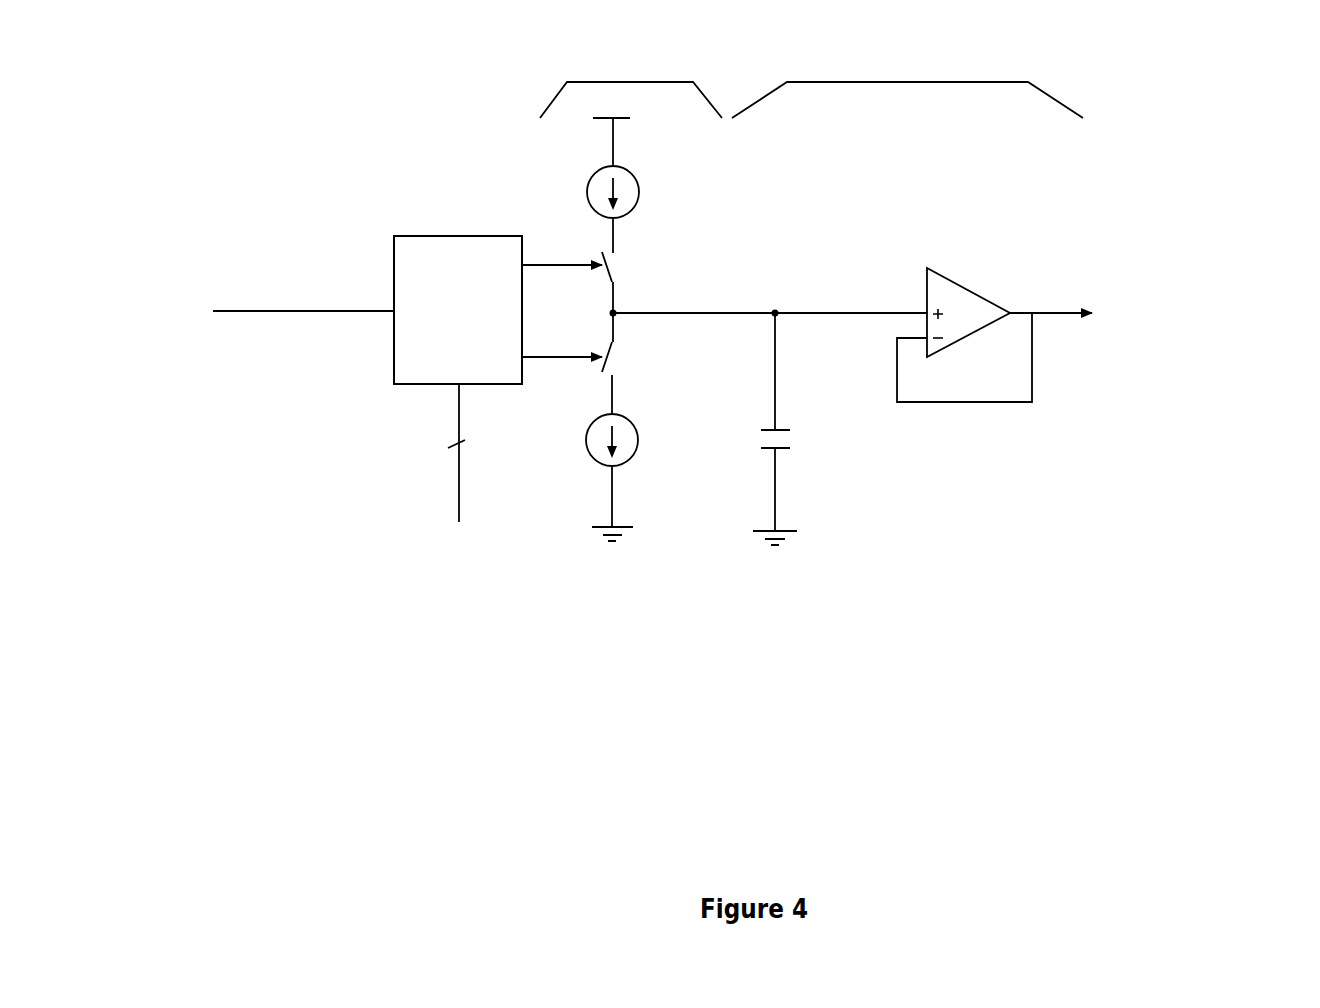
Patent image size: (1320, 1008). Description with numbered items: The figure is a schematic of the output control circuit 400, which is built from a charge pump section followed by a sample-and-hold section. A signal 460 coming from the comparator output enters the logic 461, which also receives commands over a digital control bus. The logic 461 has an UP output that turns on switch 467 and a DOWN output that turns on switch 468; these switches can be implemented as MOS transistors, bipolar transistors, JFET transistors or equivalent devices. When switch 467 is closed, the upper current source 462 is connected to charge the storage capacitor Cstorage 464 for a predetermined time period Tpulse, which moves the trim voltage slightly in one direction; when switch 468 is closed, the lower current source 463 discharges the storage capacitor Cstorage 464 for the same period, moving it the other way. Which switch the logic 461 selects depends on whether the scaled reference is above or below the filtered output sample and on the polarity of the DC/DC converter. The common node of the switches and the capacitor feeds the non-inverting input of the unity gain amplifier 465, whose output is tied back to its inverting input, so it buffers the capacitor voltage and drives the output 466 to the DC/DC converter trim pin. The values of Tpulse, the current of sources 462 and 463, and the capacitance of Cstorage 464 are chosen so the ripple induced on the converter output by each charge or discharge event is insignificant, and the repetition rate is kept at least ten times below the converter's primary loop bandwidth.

The trim control circuit 400 is at (697, 452).
The comparator output input line 460 is at (241, 314).
The logic 461 is at (498, 408).
The current source 462 is at (628, 185).
The current source 463 is at (629, 477).
The storage capacitor Cstorage 464 is at (812, 429).
The unity gain amplifier 465 is at (964, 335).
The output to DC-DC converter trim pin 466 is at (1158, 325).
The switch 467 is at (633, 282).
The switch 468 is at (633, 363).